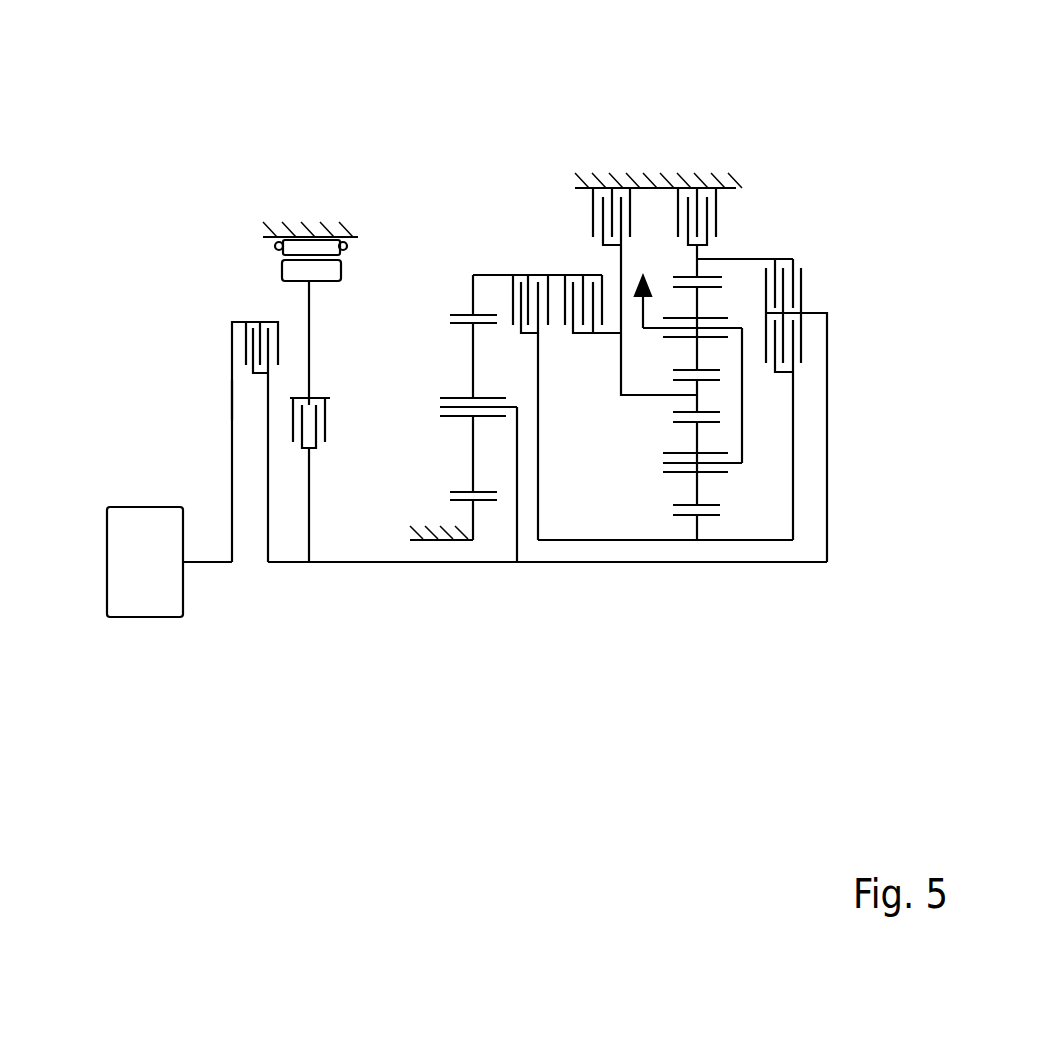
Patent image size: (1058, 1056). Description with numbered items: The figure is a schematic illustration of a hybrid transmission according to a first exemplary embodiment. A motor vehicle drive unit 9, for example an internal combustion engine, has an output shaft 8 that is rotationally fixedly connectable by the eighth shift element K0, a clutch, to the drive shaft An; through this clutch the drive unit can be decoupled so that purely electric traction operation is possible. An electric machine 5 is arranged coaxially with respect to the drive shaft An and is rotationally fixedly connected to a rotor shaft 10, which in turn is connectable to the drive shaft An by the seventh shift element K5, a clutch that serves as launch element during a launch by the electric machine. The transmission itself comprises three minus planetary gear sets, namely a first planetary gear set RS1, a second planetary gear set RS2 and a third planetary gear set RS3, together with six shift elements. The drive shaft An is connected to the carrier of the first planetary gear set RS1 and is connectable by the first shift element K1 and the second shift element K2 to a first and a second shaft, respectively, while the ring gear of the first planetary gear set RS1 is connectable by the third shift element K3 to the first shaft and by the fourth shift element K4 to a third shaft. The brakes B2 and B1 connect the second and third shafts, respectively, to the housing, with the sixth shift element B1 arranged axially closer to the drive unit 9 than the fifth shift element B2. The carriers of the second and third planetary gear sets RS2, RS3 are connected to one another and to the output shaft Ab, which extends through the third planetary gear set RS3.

The motor vehicle drive unit 9 is at (140, 523).
The output shaft 8 is at (232, 402).
The eighth shift element K0 is at (262, 318).
The electric machine 5 is at (303, 238).
The rotor shaft 10 is at (312, 322).
The seventh shift element K5 is at (316, 458).
The first planetary gear set RS1 is at (447, 504).
The drive shaft An is at (471, 573).
The third shift element K3 is at (515, 273).
The fourth shift element K4 is at (573, 273).
The sixth shift element B1 is at (591, 212).
The fifth shift element B2 is at (721, 213).
The third planetary gear set RS3 is at (712, 508).
The second planetary gear set RS2 is at (697, 573).
The output shaft Ab is at (646, 288).
The second shift element K2 is at (805, 289).
The first shift element K1 is at (805, 339).